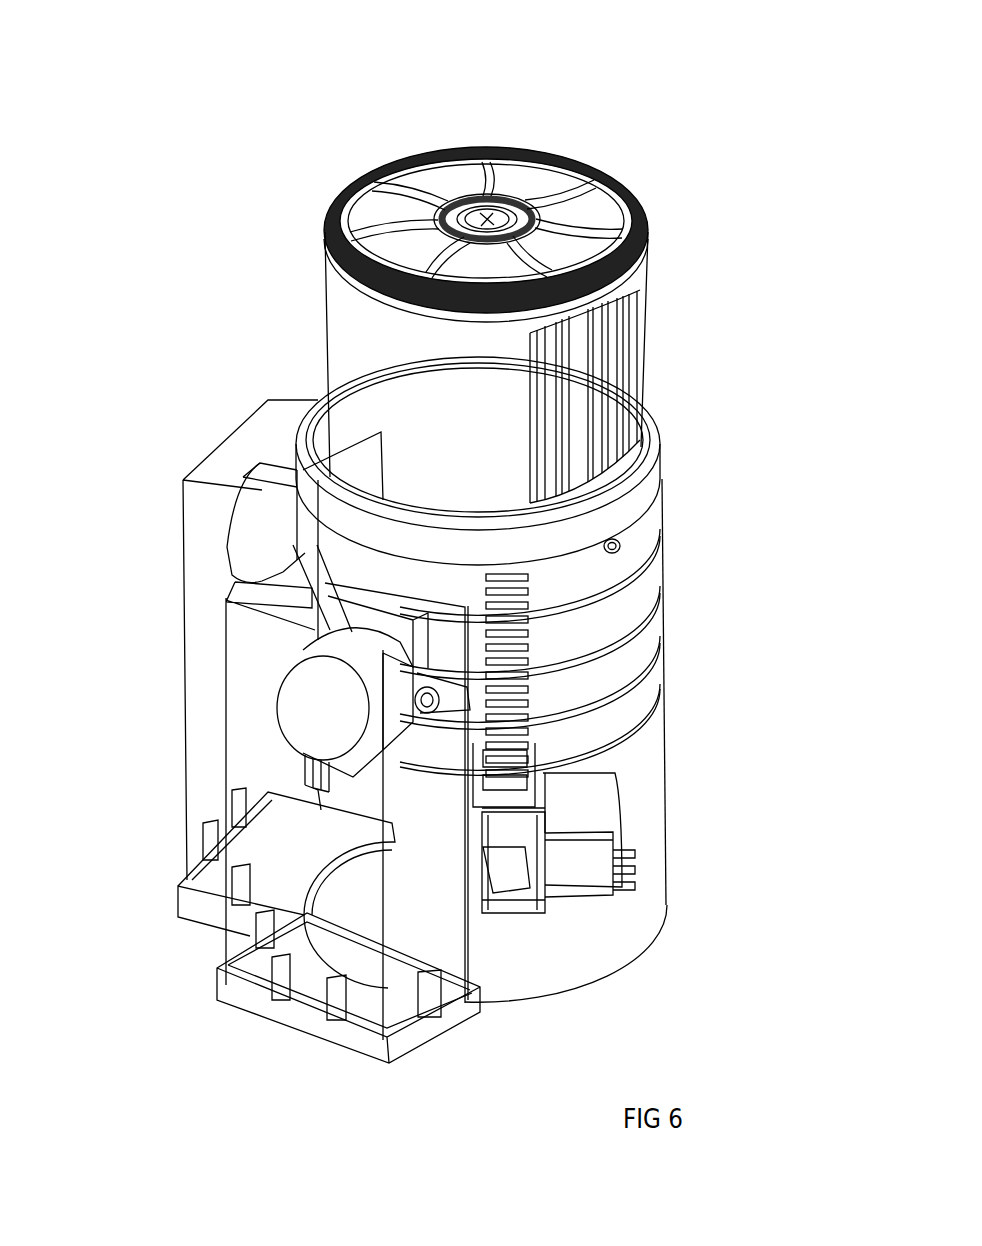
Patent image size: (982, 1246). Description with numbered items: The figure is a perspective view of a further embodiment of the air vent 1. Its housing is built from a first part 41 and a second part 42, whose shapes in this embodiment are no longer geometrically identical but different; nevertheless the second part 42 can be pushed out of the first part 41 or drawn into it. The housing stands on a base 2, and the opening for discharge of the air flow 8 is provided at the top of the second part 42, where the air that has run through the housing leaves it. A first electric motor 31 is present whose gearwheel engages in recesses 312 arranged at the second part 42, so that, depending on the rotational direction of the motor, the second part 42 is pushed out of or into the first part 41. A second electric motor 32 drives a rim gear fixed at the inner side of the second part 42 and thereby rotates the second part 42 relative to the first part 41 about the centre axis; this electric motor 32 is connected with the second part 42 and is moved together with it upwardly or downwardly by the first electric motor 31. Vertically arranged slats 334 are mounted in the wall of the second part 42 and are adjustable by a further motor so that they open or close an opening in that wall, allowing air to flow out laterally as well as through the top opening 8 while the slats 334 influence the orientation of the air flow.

The air vent 1 is at (240, 368).
The base 2 is at (430, 1040).
The opening for discharge of a flow of air 8 is at (427, 203).
The first electric motor 31 is at (565, 867).
The second electric motor 32 is at (263, 532).
The first part of the housing 41 is at (665, 688).
The second part of the housing 42 is at (360, 313).
The recesses 312 is at (505, 648).
The vertically arranged slats 334 is at (607, 370).